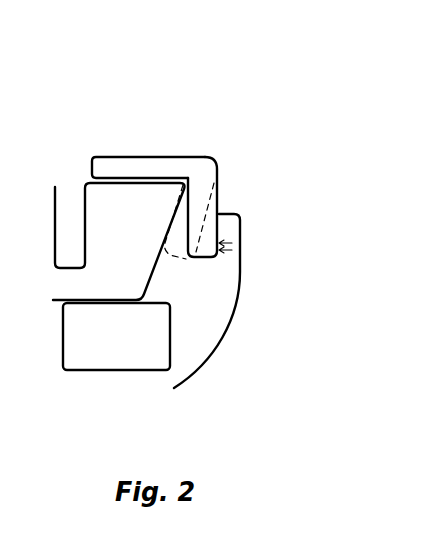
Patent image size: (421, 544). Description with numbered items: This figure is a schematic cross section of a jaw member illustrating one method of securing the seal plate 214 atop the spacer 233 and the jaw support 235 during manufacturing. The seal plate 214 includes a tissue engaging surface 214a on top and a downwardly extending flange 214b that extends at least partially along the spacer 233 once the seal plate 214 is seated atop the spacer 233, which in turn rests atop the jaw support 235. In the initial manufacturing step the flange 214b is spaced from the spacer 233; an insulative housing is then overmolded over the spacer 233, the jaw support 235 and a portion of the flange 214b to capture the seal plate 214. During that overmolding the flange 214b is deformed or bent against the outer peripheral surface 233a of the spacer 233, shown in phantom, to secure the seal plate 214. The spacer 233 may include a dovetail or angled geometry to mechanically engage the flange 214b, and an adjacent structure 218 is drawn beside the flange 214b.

The seal plate 214 is at (202, 150).
The tissue engaging surface 214a is at (122, 168).
The downwardly extending flange 214b is at (205, 183).
The spacer 233 is at (150, 222).
The outer peripheral surface 233a is at (181, 183).
The bracket 218 is at (225, 271).
The jaw support 235 is at (150, 343).